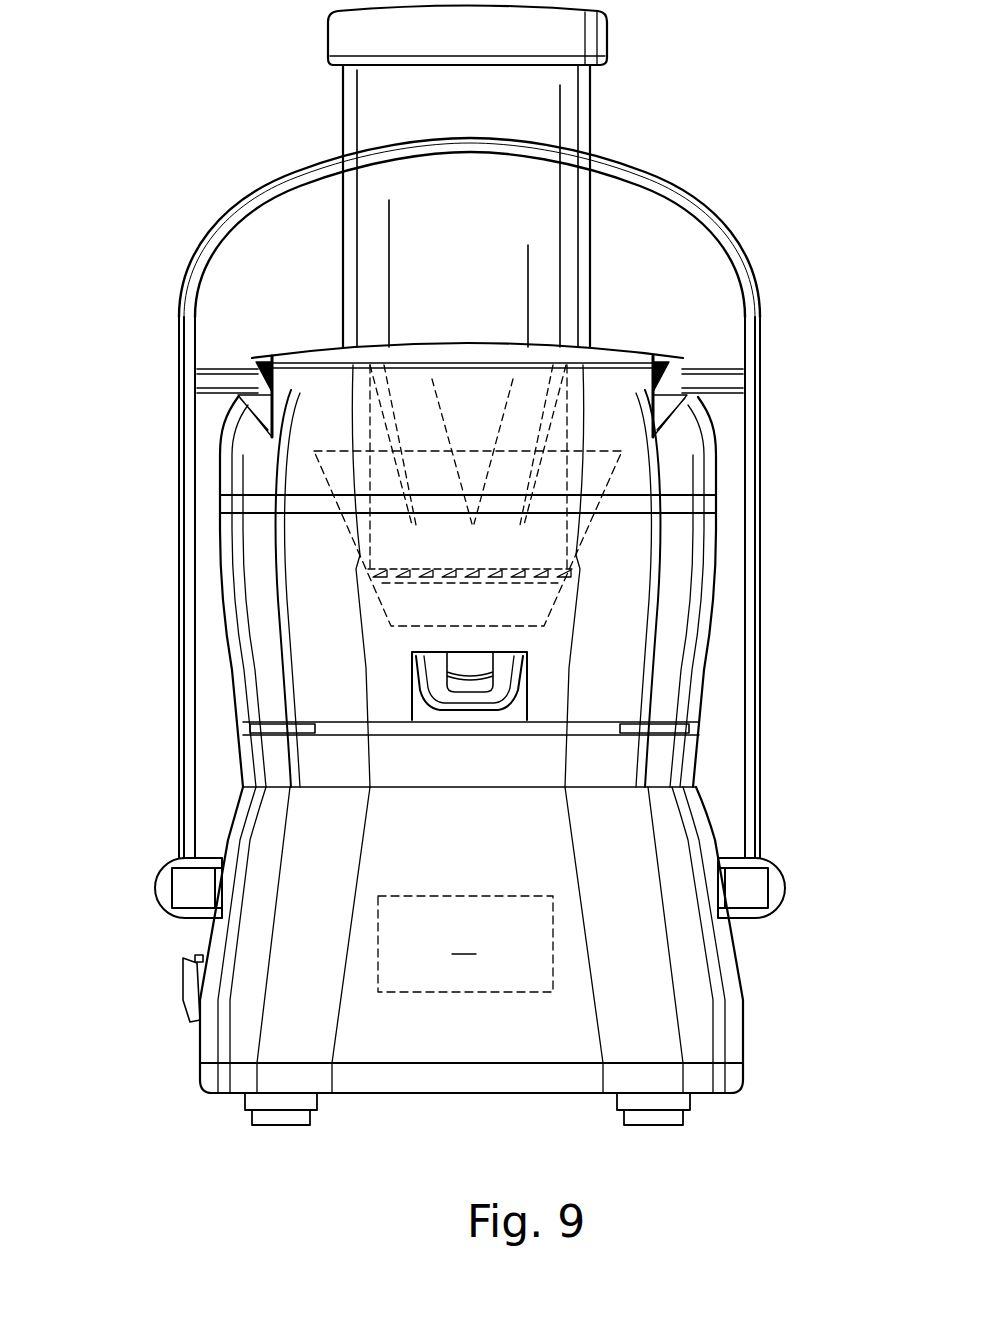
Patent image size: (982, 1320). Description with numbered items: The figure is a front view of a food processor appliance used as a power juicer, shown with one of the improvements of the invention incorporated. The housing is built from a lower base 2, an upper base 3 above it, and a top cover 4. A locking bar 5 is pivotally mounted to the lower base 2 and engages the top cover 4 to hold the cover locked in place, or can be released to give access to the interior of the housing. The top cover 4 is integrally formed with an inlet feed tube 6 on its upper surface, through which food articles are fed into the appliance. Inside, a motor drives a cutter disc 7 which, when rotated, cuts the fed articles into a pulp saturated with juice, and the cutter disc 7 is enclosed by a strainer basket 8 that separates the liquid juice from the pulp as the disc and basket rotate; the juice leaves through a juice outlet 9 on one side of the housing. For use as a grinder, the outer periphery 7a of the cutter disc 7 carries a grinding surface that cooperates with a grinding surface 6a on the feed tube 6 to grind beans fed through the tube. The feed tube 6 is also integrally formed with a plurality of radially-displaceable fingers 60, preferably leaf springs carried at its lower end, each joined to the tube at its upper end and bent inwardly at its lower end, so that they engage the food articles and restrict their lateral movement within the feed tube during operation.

The lower base 2 is at (265, 955).
The upper base 3 is at (263, 563).
The top cover 4 is at (220, 472).
The locking bar 5 is at (738, 232).
The inlet feed tube 6 is at (583, 243).
The grinding surface 6a is at (574, 559).
The cutter disc 7 is at (415, 560).
The outer periphery 7a is at (383, 572).
The strainer basket 8 is at (586, 525).
The juice outlet 9 is at (520, 672).
The radially-displaceable fingers 60 is at (374, 398).